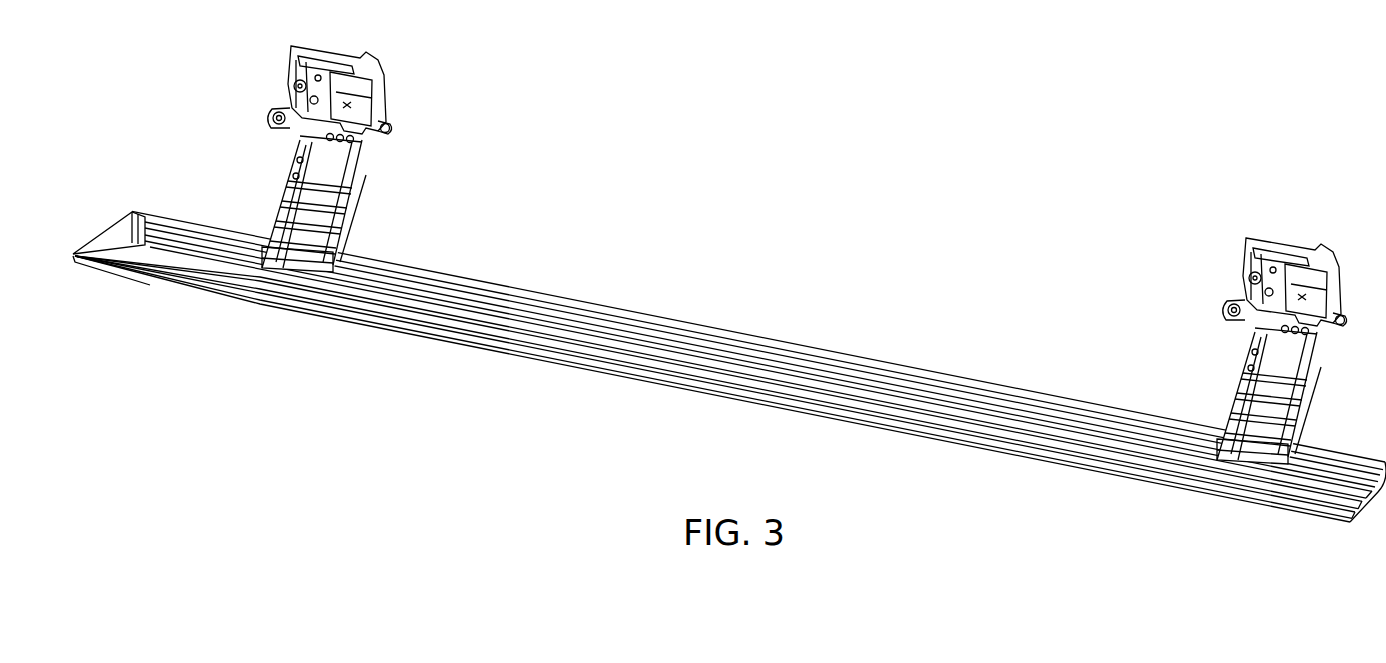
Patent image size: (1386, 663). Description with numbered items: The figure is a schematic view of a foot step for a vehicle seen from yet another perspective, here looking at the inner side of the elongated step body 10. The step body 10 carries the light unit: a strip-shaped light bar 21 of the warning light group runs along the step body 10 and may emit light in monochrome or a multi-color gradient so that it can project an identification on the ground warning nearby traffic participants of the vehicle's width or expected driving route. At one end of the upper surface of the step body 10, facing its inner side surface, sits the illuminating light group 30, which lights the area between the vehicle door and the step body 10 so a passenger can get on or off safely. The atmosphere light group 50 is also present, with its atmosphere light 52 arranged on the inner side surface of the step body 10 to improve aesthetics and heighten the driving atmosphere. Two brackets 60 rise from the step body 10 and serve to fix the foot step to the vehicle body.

The step body 10 is at (730, 366).
The strip-shaped light bar 21 is at (132, 270).
The illuminating light group 30 is at (150, 217).
The atmosphere light group 50 is at (725, 376).
The atmosphere light 52 is at (468, 303).
The bracket 60 is at (327, 165).